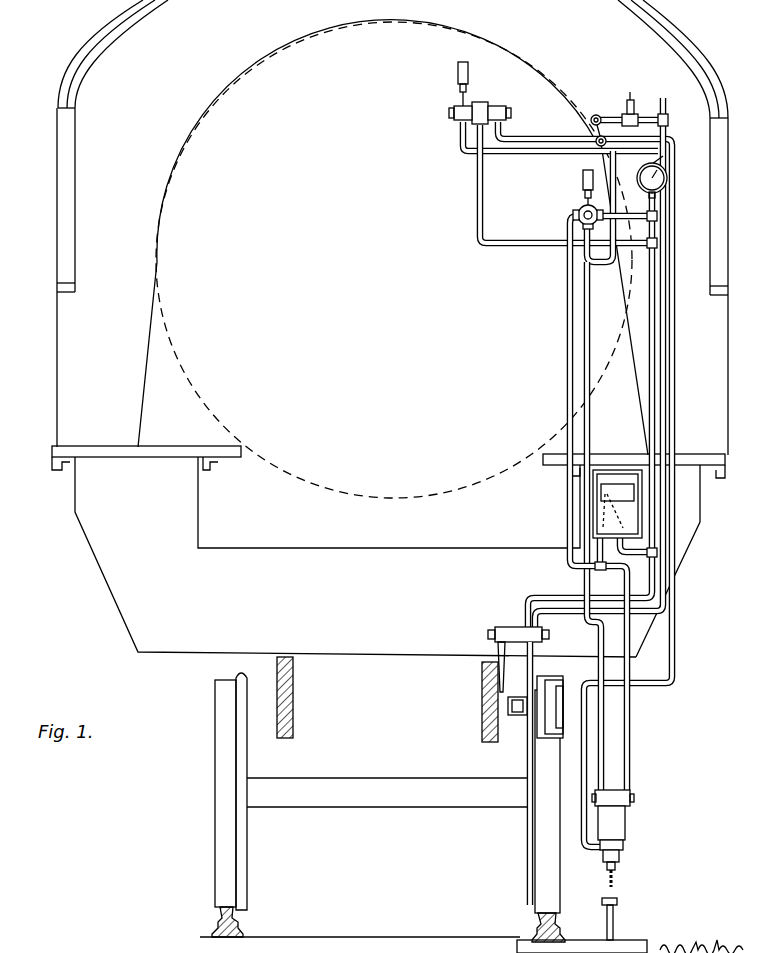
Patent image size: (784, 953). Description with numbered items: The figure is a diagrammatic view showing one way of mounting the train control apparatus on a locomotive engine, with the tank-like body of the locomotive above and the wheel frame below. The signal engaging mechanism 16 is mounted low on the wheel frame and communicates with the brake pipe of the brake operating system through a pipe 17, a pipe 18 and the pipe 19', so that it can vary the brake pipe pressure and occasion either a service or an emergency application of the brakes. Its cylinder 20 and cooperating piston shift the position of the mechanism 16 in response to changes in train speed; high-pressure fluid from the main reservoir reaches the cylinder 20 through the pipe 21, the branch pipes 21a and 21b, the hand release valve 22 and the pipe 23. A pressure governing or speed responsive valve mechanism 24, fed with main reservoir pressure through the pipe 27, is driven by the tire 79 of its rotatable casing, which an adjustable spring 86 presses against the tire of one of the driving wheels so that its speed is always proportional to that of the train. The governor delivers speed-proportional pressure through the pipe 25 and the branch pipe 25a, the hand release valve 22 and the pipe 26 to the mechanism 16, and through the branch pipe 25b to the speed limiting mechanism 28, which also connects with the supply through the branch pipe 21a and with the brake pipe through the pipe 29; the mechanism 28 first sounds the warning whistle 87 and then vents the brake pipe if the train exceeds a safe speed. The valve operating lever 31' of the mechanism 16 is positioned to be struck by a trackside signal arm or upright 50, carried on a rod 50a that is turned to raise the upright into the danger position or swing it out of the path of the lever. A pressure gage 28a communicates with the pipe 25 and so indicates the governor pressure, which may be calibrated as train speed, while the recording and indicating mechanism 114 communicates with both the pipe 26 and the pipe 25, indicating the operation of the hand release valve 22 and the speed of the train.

The signal engaging mechanism 16 is at (630, 822).
The pipe 17 is at (594, 137).
The pipe 18 is at (674, 402).
The pipe 19' is at (524, 843).
The cylinder 20 is at (630, 812).
The pipe 21 is at (598, 116).
The branch pipe 21a is at (458, 148).
The branch pipe 21b is at (596, 158).
The hand release valve 22 is at (576, 212).
The pipe 23 is at (590, 422).
The pressure governing or speed responsive valve mechanism 24 is at (527, 718).
The pipe 25 is at (660, 336).
The branch pipe 25a is at (640, 248).
The branch pipe 25b is at (477, 207).
The pipe 26 is at (565, 362).
The pipe 27 is at (657, 302).
The speed limiting mechanism 28 is at (481, 102).
The pressure gage 28a is at (667, 182).
The pipe 29 is at (508, 137).
The lever 31' is at (639, 863).
The signal arm or upright 50 is at (604, 913).
The rod 50a is at (636, 945).
The tire 79 is at (548, 740).
The adjustable spring 86 is at (516, 628).
The warning whistle 87 is at (455, 76).
The recording and indicating mechanism 114 is at (593, 512).